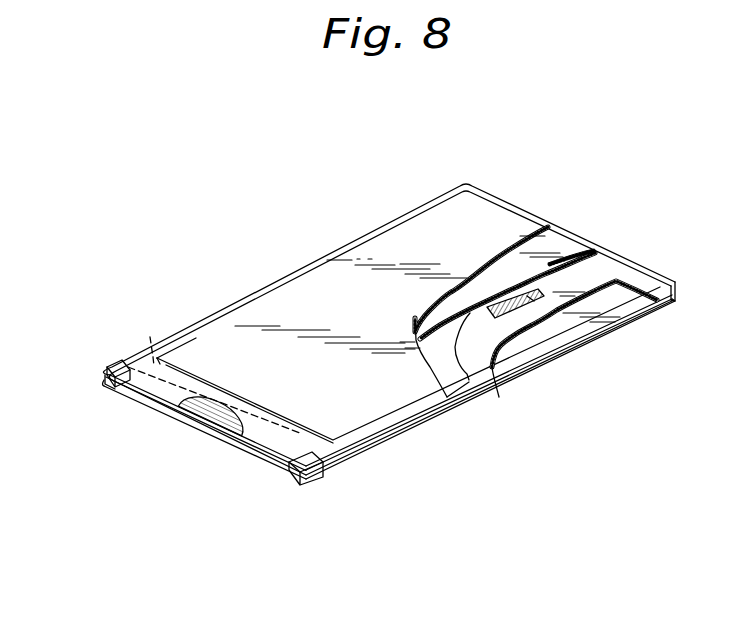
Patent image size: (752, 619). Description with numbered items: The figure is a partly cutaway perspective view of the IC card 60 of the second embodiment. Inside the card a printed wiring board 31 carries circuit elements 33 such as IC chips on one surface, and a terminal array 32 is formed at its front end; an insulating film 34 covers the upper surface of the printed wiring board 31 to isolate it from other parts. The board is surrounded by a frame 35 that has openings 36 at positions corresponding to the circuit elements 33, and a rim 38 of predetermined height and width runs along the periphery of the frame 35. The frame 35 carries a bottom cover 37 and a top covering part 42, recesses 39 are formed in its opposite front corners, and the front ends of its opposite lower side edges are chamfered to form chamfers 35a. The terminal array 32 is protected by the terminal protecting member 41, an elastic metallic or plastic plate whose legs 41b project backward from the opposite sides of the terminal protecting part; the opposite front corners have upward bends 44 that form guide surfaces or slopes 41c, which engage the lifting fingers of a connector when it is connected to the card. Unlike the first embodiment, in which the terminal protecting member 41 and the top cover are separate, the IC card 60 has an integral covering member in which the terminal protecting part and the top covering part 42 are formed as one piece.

The printed wiring board 31 is at (452, 378).
The terminal array 32 is at (205, 437).
The circuit elements 33 is at (497, 320).
The insulating film 34 is at (558, 243).
The frame 35 is at (600, 270).
The chamfers 35a is at (92, 391).
The openings 36 is at (527, 305).
The bottom cover 37 is at (600, 327).
The rim 38 is at (665, 271).
The recesses 39 is at (90, 383).
The terminal protecting member 41 is at (150, 337).
The legs 41b is at (185, 338).
The guide surfaces or slopes 41c is at (337, 479).
The top covering part 42 is at (427, 233).
The upward bends 44 is at (367, 250).
The IC card 60 is at (505, 213).